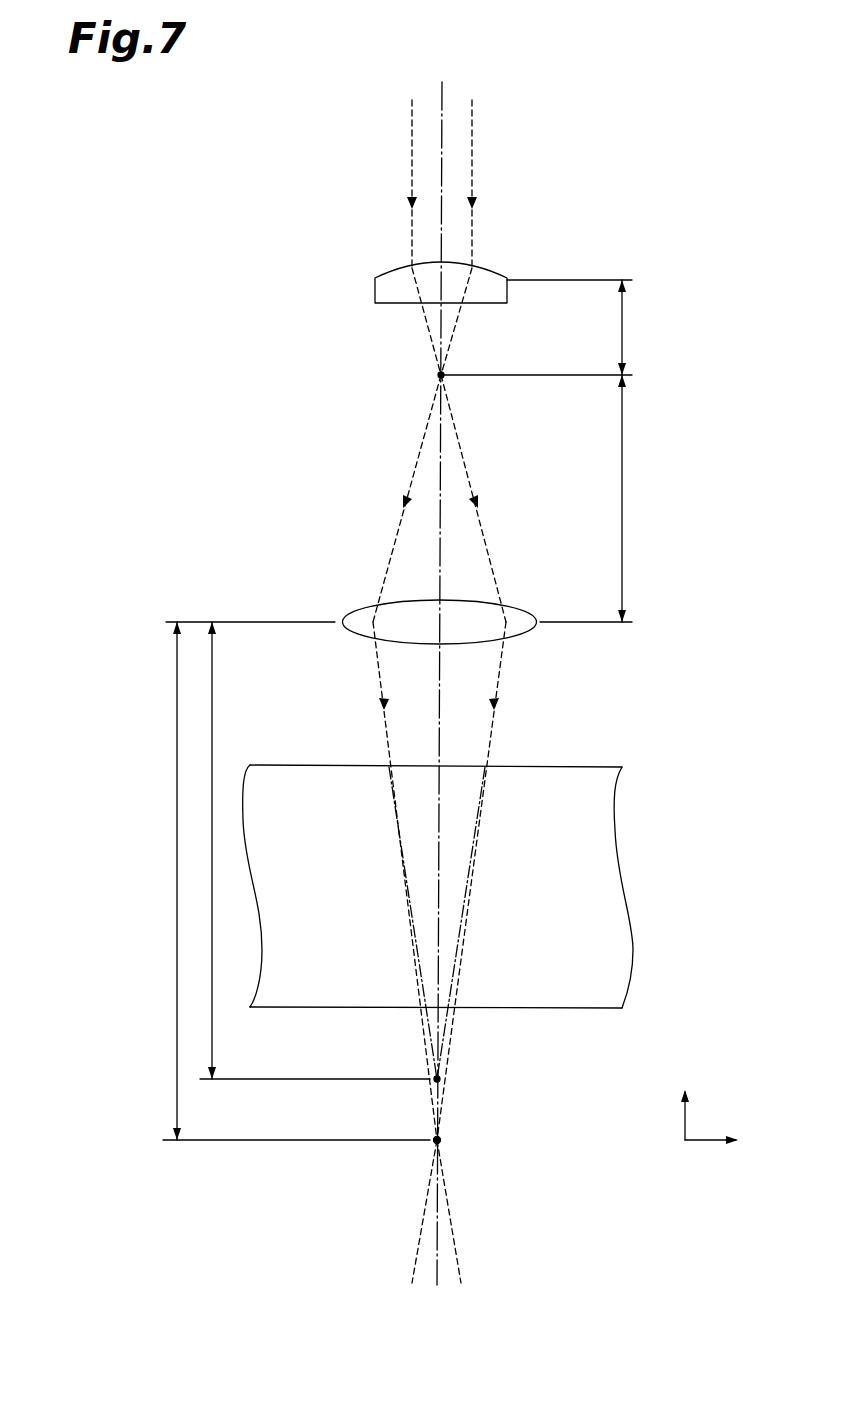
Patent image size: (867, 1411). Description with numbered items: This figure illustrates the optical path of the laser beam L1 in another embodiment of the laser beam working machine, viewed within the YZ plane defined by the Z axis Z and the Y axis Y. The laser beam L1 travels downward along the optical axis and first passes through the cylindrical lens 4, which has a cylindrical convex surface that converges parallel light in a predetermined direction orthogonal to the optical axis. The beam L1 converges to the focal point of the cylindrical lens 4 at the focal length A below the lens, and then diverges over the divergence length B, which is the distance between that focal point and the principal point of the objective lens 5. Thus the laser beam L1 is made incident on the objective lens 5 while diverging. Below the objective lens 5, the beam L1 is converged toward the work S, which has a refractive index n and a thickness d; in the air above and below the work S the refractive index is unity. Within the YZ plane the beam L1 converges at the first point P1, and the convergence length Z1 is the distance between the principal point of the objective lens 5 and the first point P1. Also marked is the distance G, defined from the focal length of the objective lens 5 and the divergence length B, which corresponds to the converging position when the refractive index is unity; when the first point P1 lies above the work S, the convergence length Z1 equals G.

The laser beam L1 is at (412, 128).
The cylindrical lens 4 is at (375, 290).
The objective lens 5 is at (517, 608).
The work S is at (575, 765).
The focal length of the cylindrical lens A is at (536, 327).
The divergence length B is at (586, 498).
The convergence length within the YZ plane Z1 is at (284, 881).
The distance G is at (312, 852).
The first point P1 is at (442, 1140).
The Z axis Z is at (684, 1102).
The Y axis Y is at (720, 1142).